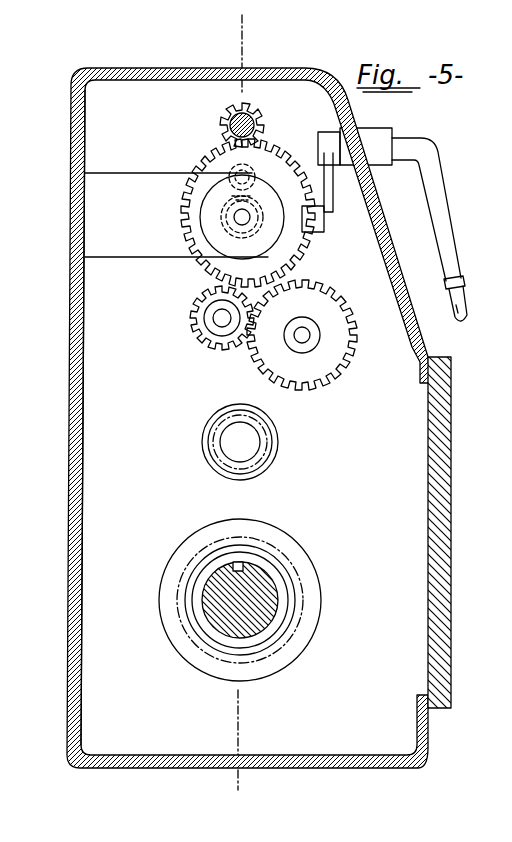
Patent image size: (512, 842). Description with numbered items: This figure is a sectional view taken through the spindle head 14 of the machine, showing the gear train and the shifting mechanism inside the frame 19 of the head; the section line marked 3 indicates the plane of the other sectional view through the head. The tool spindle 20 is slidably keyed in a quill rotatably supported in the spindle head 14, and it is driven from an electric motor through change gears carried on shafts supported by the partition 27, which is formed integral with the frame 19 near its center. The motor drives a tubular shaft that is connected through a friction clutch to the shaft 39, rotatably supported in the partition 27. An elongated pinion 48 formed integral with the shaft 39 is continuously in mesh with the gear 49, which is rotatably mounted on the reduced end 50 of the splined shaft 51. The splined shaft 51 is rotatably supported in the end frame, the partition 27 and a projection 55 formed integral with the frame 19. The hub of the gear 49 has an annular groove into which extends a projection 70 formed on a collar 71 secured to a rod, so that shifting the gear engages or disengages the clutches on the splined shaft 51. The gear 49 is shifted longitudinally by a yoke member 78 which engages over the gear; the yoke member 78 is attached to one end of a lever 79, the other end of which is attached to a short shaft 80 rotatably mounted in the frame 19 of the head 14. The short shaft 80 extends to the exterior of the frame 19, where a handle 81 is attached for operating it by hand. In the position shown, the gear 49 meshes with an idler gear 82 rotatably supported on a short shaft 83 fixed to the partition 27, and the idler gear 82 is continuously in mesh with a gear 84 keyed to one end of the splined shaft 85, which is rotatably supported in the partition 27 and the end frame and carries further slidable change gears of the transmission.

The section line of FIG. 3 is at (262, 40).
The spindle head 14 is at (82, 490).
The frame 19 is at (70, 298).
The tool spindle 20 is at (270, 602).
The partition 27 is at (217, 596).
The shaft 39 is at (230, 118).
The elongated pinion 48 is at (262, 120).
The gear 49 is at (212, 270).
The reduced end 50 is at (242, 222).
The splined shaft 51 is at (226, 218).
The projection 55 is at (138, 192).
The projection 70 is at (252, 175).
The collar 71 is at (244, 200).
The yoke member 78 is at (324, 225).
The lever 79 is at (333, 190).
The short shaft 80 is at (380, 162).
The handle 81 is at (448, 197).
The idler gear 82 is at (207, 325).
The short shaft 83 is at (221, 320).
The gear 84 is at (335, 357).
The splined shaft 85 is at (305, 332).